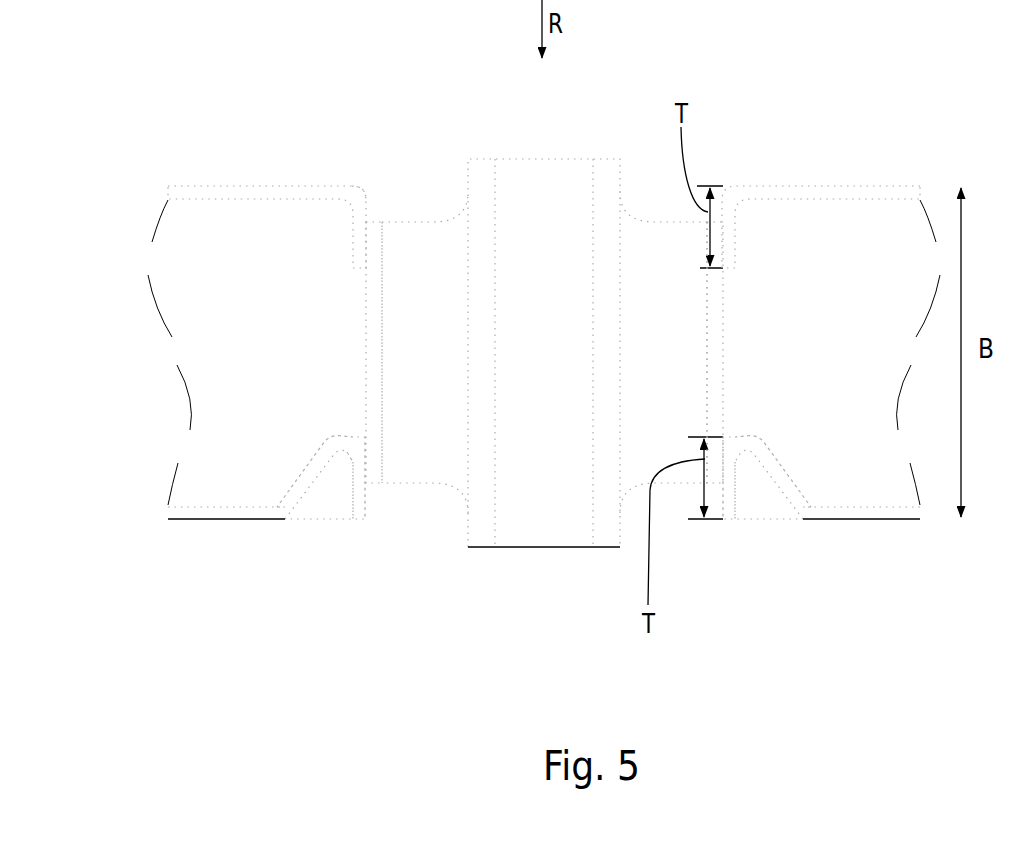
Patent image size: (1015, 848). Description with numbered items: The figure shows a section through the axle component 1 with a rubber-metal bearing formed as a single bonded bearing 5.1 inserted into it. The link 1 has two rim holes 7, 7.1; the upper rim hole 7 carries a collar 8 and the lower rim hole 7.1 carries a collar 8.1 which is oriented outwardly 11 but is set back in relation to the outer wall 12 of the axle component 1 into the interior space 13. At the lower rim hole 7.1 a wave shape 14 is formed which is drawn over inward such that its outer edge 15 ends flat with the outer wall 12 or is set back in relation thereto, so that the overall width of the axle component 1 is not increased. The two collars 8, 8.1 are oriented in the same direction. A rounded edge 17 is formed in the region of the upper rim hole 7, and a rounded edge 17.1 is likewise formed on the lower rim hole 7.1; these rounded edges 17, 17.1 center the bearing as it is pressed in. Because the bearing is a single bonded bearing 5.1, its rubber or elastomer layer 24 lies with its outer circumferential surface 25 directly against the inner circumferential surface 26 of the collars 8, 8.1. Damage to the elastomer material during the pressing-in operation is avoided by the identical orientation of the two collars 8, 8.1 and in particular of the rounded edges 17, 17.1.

The axle component 1 is at (885, 151).
The single bonded bearing 5.1 is at (605, 151).
The rim hole 7 is at (351, 232).
The lower rim hole 7.1 is at (351, 483).
The collar 8 is at (737, 247).
The collar 8.1 is at (733, 481).
The outwardly 11 is at (370, 678).
The outer wall 12 is at (222, 522).
The interior space 13 is at (262, 380).
The wave shape 14 is at (318, 445).
The outer edge 15 is at (728, 522).
The rounded edge 17 is at (360, 192).
The rounded edge 17.1 is at (356, 436).
The elastomer layer 24 is at (435, 448).
The outer circumferential surface 25 is at (364, 340).
The inner circumferential surface 26 is at (367, 458).